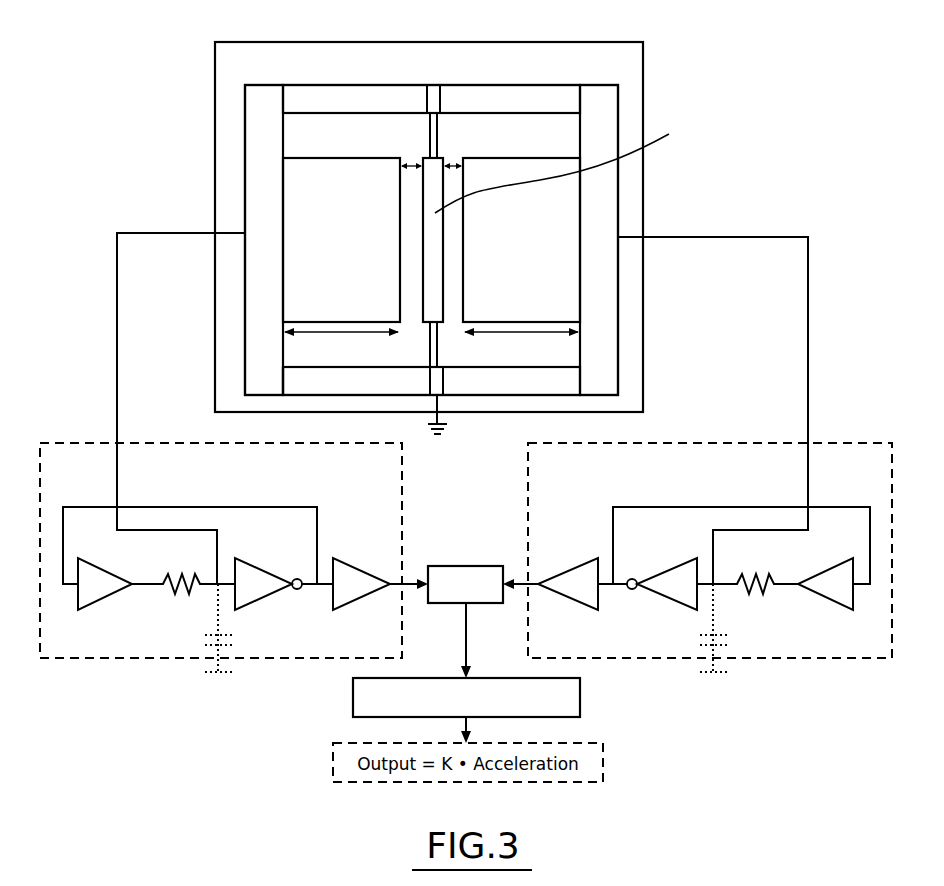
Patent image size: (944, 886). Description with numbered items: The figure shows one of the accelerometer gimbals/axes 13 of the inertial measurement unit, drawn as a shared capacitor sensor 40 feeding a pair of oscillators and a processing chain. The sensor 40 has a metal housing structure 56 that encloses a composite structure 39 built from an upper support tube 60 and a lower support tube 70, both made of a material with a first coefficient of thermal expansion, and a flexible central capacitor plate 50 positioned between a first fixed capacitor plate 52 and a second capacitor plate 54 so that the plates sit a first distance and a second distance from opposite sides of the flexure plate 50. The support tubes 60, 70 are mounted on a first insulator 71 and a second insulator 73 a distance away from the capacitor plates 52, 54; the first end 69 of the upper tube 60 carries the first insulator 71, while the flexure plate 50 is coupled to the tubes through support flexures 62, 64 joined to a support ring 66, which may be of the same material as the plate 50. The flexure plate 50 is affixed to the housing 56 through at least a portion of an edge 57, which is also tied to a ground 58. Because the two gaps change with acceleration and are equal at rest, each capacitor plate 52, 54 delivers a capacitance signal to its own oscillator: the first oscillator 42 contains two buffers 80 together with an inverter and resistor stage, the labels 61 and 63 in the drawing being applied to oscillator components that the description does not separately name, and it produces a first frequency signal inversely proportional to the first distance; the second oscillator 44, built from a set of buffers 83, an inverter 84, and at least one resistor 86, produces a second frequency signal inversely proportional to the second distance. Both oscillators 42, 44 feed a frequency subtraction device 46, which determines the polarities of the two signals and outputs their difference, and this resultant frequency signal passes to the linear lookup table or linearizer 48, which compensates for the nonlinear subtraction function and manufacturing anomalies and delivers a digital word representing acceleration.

The second accelerometer gimbal/axis 13 is at (779, 68).
The composite structure 39 is at (266, 85).
The shared capacitor sensor 40 is at (346, 42).
The first oscillator 42 is at (135, 443).
The second oscillator 44 is at (737, 443).
The frequency subtraction device 46 is at (485, 566).
The linear lookup table 48 is at (582, 699).
The flexible central capacitor plate 50 is at (440, 270).
The upper capacitor plate 52 is at (375, 158).
The lower capacitor plate 54 is at (526, 158).
The metal housing structure 56 is at (273, 42).
The edge of flexure plate 57 is at (430, 332).
The ground 58 is at (450, 437).
The upper cylinder support tube 60 is at (375, 396).
The inverter 61 is at (262, 572).
The support flexure 62 is at (440, 346).
The buffer 63 is at (580, 572).
The support flexure 64 is at (440, 124).
The support ring 66 is at (441, 397).
The first end of first support tube 69 is at (283, 383).
The lower cylinder support tube 70 is at (497, 397).
The first insulator 71 is at (245, 272).
The second insulator 73 is at (594, 85).
The buffers 80 is at (100, 572).
The buffers 83 is at (826, 572).
The inverter 84 is at (684, 572).
The resistor 86 is at (752, 578).